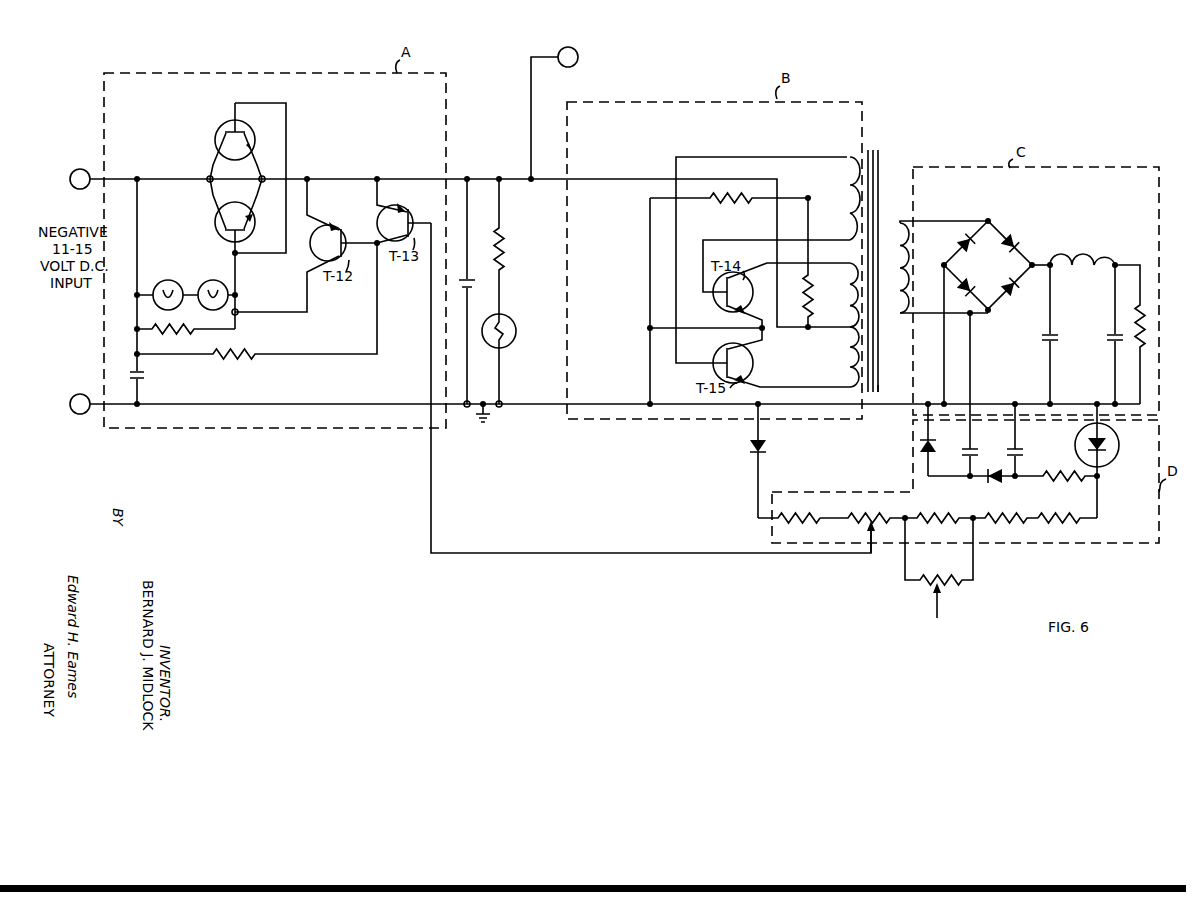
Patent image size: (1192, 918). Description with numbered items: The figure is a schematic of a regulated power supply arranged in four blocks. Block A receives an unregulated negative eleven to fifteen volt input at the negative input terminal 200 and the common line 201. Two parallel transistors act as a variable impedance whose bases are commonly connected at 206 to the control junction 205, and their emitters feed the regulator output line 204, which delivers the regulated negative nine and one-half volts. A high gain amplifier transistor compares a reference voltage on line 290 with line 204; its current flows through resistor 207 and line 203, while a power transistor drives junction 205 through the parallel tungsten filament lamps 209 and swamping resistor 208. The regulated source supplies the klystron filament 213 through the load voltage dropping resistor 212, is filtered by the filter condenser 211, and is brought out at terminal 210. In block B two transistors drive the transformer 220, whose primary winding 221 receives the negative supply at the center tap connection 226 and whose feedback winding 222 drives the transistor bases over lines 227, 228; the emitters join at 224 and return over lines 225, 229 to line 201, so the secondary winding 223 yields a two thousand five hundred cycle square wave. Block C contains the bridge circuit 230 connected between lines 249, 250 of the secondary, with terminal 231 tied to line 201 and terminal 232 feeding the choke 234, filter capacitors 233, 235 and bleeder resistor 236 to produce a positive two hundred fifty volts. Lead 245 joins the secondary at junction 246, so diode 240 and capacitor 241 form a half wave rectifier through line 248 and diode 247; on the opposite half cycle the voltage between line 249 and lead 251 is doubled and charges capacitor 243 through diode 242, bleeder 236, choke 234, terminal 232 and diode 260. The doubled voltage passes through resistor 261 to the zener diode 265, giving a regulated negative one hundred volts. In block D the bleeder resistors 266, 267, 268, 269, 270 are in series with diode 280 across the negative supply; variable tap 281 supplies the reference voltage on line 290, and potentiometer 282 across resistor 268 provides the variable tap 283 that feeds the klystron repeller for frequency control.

The negative input terminal 200 is at (79, 169).
The common line 201 is at (80, 418).
The line 203 is at (141, 236).
The regulator output line 204 is at (386, 180).
The control junction 205 is at (238, 256).
The common base connection 206 is at (286, 145).
The resistor 207 is at (238, 368).
The swamping resistor 208 is at (162, 332).
The tungsten filament lamps 209 is at (164, 288).
The terminal 210 is at (572, 49).
The filter condenser 211 is at (478, 290).
The load voltage dropping resistor 212 is at (506, 267).
The klystron filament 213 is at (516, 331).
The transformer 220 is at (912, 156).
The primary winding 221 is at (838, 373).
The feedback winding 222 is at (846, 160).
The secondary winding 223 is at (921, 230).
The common emitter connection 224 is at (764, 332).
The line 225 is at (648, 329).
The center tap connection 226 is at (848, 328).
The line 227 is at (711, 161).
The line 228 is at (752, 239).
The line 229 is at (635, 393).
The bridge circuit 230 is at (997, 257).
The terminal 231 is at (943, 258).
The terminal 232 is at (1010, 283).
The filter capacitor 233 is at (1044, 340).
The choke 234 is at (1087, 261).
The filter capacitor 235 is at (1111, 340).
The bleeder resistor 236 is at (1150, 338).
The diode 240 is at (920, 455).
The capacitor 241 is at (976, 453).
The diode 242 is at (1001, 481).
The capacitor 243 is at (1025, 453).
The lead 245 is at (975, 387).
The junction 246 is at (976, 321).
The diode 247 is at (994, 235).
The line 248 is at (916, 371).
The line 249 is at (956, 221).
The line 250 is at (912, 306).
The lead 251 is at (944, 477).
The diode 260 is at (1014, 250).
The resistor 261 is at (1054, 483).
The zener diode 265 is at (1104, 463).
The bleeder resistor 266 is at (1077, 524).
The bleeder resistor 267 is at (999, 524).
The bleeder resistor 268 is at (918, 503).
The bleeder resistor 269 is at (853, 503).
The bleeder resistor 270 is at (783, 503).
The diode 280 is at (750, 448).
The variable tap 281 is at (871, 551).
The potentiometer 282 is at (942, 589).
The variable tap 283 is at (938, 624).
The reference voltage line 290 is at (635, 564).